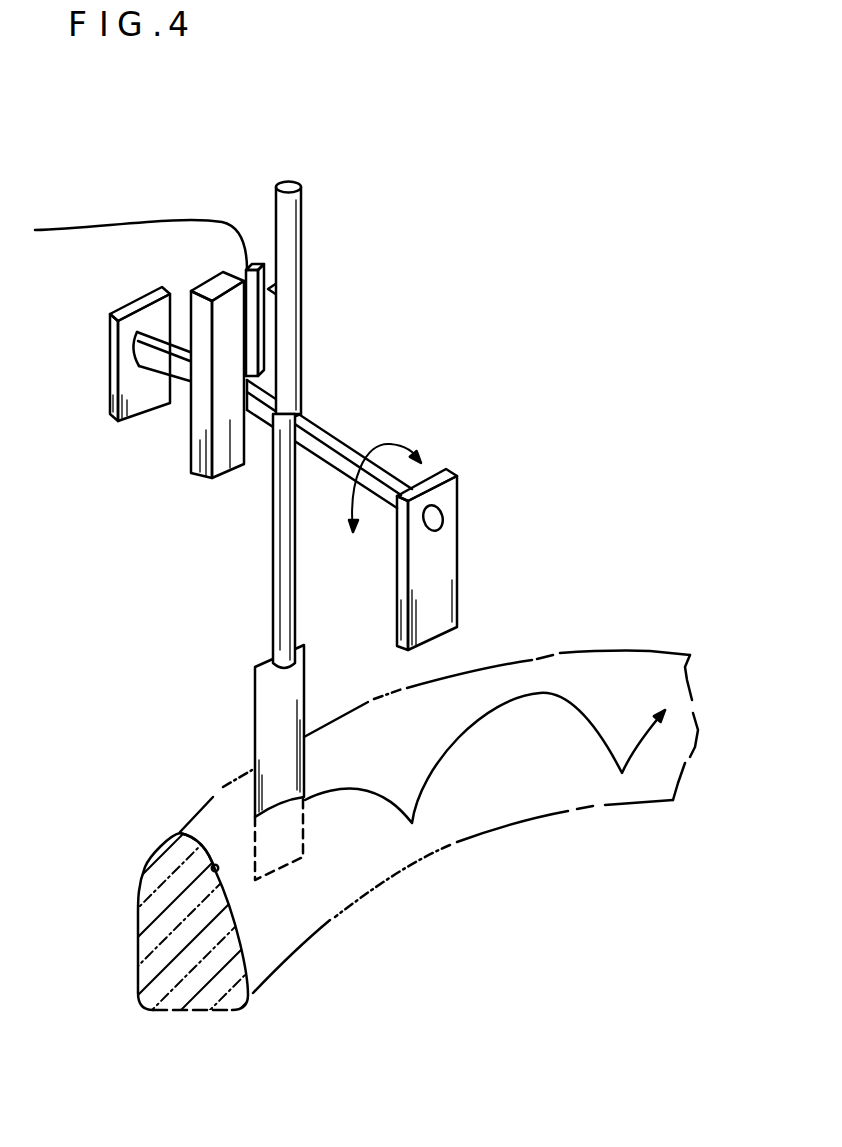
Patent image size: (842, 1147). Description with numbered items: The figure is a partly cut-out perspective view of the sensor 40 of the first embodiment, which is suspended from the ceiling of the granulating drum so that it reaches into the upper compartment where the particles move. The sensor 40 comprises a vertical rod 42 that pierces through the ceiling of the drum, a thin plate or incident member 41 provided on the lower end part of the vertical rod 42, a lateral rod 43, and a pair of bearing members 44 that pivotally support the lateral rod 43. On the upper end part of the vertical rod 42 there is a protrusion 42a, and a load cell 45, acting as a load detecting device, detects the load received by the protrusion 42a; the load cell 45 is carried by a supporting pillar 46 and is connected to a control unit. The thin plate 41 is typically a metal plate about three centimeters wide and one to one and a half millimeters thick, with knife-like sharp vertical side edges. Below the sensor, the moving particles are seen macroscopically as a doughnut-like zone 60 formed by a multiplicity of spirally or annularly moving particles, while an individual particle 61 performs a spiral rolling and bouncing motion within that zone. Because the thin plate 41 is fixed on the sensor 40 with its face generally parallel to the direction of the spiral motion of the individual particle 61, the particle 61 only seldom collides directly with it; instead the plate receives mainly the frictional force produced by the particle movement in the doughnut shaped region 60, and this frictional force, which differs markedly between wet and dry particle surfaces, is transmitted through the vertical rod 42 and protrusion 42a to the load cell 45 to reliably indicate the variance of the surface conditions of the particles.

The sensor 40 is at (296, 511).
The thin plate 41 is at (263, 710).
The vertical rod 42 is at (280, 537).
The protrusion 42a is at (286, 289).
The lateral rod 43 is at (347, 448).
The bearing member 44 is at (131, 379).
The load cell 45 is at (257, 262).
The supporting pillar 46 is at (218, 443).
The doughnut-like zone 60 is at (455, 846).
The individual particle 61 is at (180, 832).